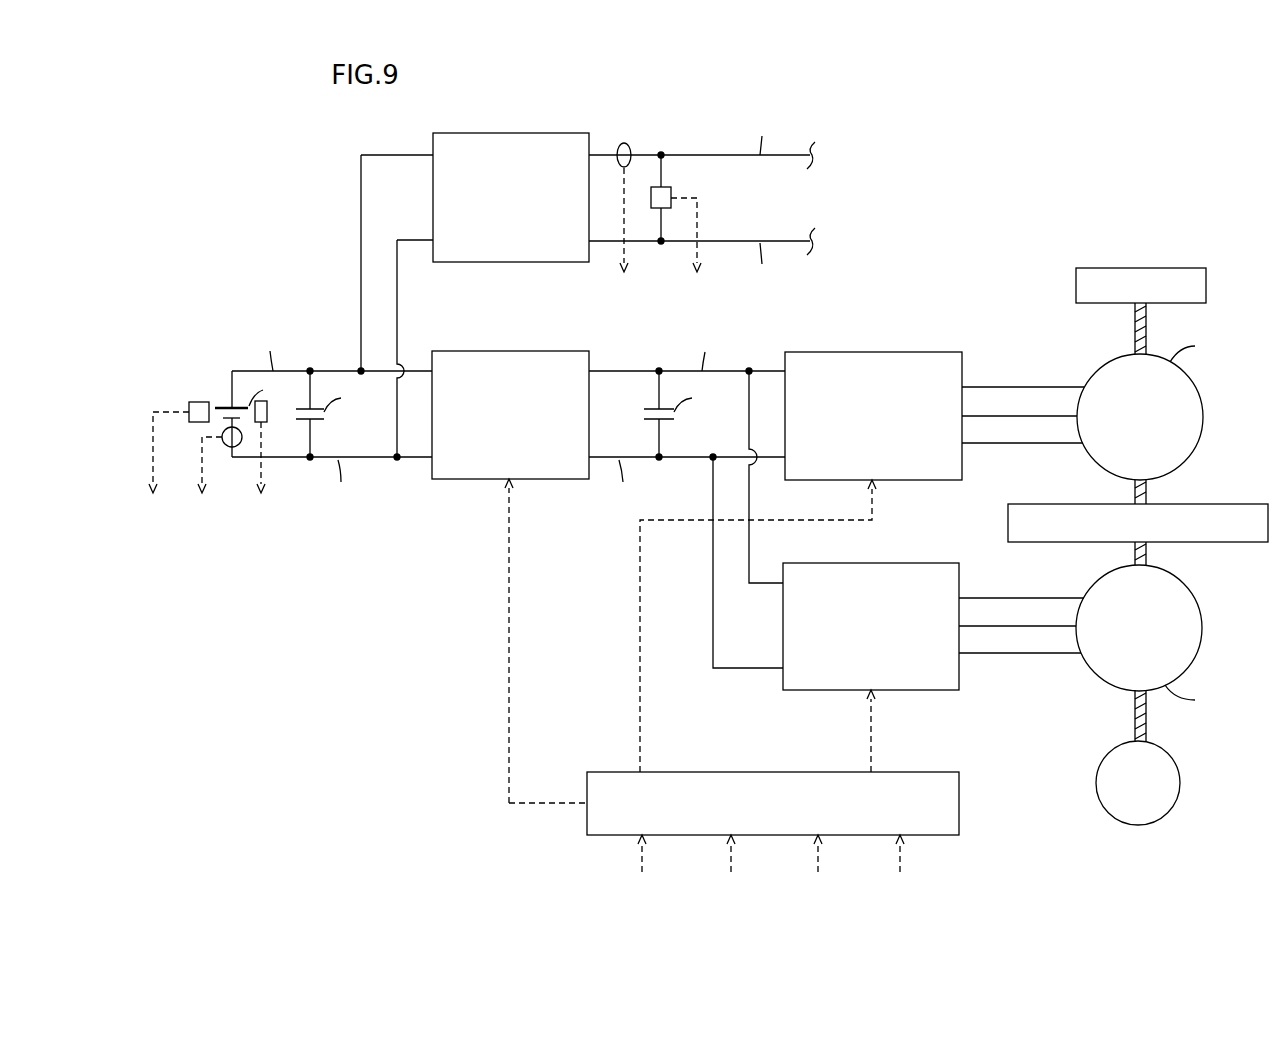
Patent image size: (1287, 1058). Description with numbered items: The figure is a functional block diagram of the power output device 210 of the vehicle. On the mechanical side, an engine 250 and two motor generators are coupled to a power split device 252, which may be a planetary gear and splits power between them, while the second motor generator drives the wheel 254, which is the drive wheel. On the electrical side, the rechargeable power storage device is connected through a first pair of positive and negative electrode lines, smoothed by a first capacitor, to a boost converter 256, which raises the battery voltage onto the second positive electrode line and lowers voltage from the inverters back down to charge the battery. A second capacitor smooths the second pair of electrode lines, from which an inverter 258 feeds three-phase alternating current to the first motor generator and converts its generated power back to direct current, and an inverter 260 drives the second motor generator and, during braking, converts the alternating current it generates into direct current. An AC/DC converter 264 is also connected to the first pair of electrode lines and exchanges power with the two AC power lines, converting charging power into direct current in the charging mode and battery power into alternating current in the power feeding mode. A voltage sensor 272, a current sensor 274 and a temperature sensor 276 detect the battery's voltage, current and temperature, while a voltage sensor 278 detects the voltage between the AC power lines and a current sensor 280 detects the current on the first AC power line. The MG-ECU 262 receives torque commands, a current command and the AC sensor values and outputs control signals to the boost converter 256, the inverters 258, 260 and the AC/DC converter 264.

The power output device 210 is at (277, 250).
The engine 250 is at (1139, 268).
The power split device 252 is at (1188, 504).
The wheel 254 is at (1181, 783).
The boost converter 256 is at (528, 351).
The inverter 258 is at (905, 352).
The inverter 260 is at (903, 563).
The MG-ECU 262 is at (912, 772).
The AC/DC converter 264 is at (528, 133).
The voltage sensor 272 is at (200, 402).
The current sensor 274 is at (221, 446).
The temperature sensor 276 is at (268, 412).
The voltage sensor 278 is at (666, 187).
The current sensor 280 is at (624, 143).